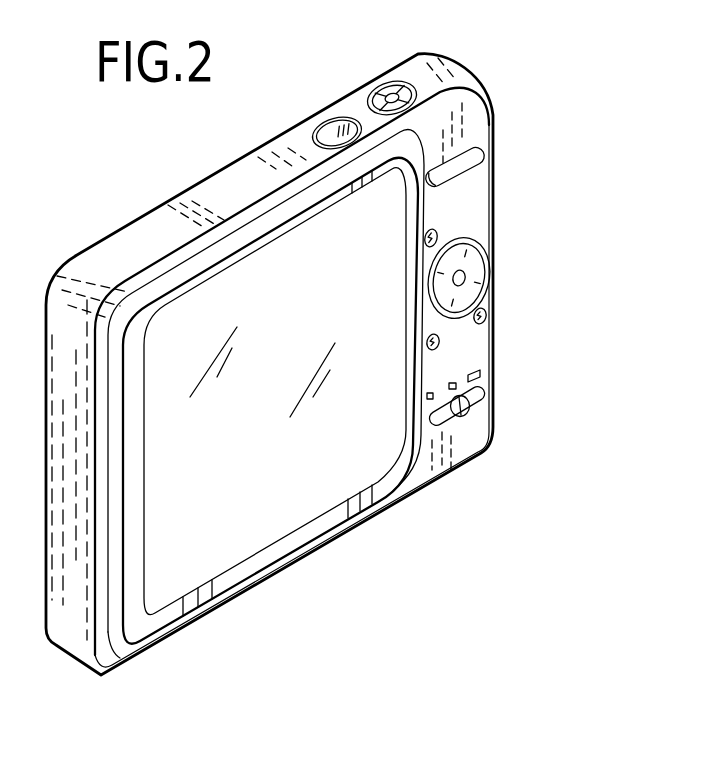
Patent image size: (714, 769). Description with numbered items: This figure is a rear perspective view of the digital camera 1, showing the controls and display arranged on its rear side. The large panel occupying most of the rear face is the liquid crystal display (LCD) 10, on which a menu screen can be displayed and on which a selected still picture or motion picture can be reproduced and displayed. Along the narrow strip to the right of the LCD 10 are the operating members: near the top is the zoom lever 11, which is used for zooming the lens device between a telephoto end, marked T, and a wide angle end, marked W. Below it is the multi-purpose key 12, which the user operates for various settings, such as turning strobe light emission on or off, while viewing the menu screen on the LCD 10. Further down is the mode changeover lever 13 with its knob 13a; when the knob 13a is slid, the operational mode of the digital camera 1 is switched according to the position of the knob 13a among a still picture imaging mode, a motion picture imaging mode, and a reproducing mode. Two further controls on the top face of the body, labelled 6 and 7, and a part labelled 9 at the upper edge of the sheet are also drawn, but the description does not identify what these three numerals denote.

The digital camera 1 is at (106, 230).
The power button 6 is at (328, 126).
The shutter button 7 is at (388, 96).
The strap attachment 9 is at (193, 7).
The liquid crystal display (LCD) 10 is at (282, 556).
The zoom lever 11 is at (458, 176).
The multi-purpose key 12 is at (503, 215).
The mode changeover lever 13 is at (468, 426).
The knob 13a is at (468, 401).